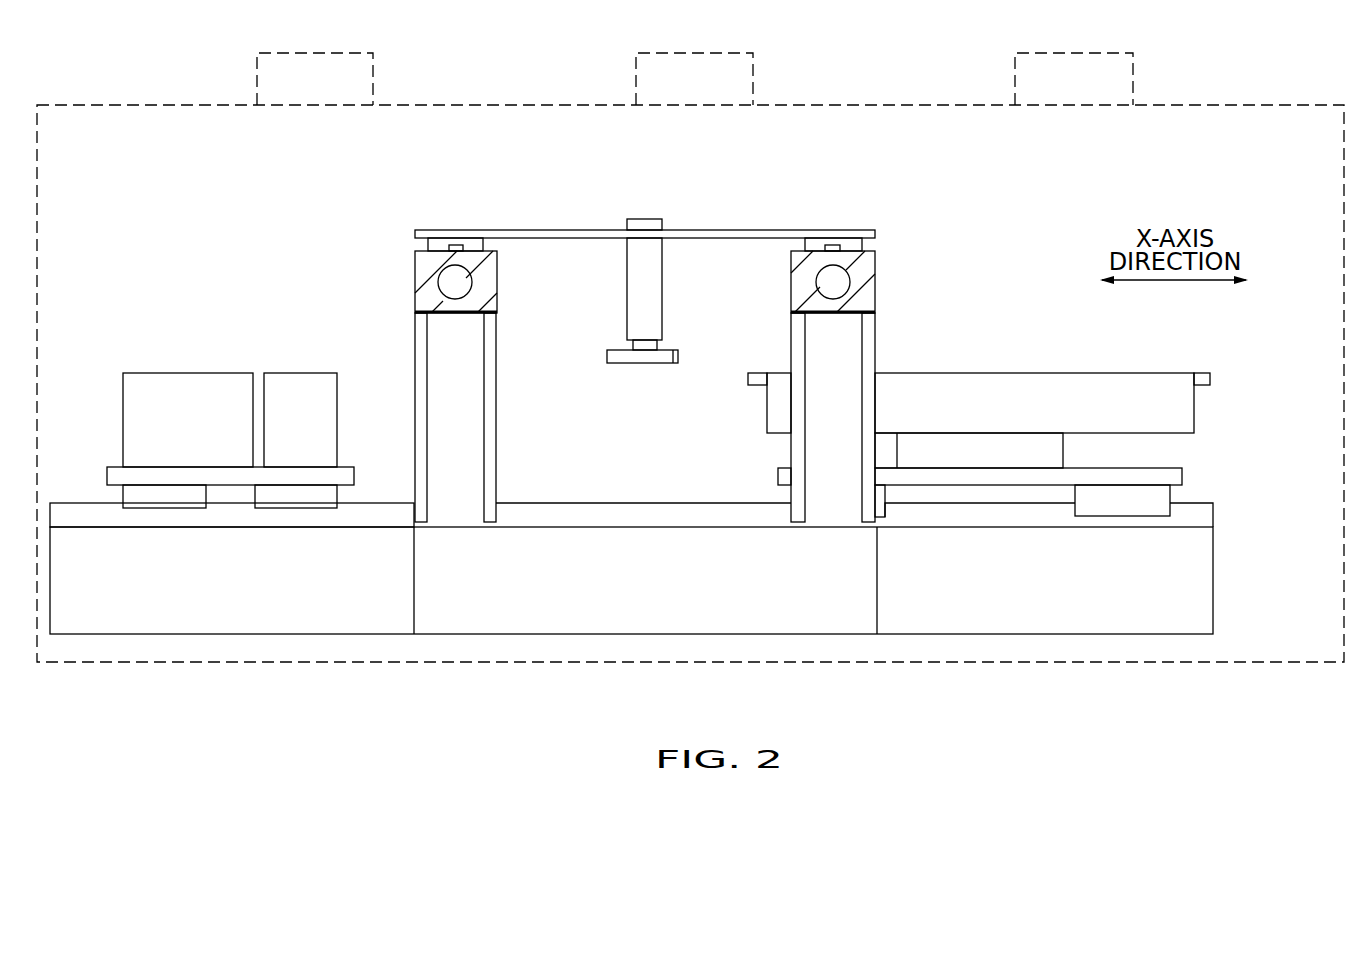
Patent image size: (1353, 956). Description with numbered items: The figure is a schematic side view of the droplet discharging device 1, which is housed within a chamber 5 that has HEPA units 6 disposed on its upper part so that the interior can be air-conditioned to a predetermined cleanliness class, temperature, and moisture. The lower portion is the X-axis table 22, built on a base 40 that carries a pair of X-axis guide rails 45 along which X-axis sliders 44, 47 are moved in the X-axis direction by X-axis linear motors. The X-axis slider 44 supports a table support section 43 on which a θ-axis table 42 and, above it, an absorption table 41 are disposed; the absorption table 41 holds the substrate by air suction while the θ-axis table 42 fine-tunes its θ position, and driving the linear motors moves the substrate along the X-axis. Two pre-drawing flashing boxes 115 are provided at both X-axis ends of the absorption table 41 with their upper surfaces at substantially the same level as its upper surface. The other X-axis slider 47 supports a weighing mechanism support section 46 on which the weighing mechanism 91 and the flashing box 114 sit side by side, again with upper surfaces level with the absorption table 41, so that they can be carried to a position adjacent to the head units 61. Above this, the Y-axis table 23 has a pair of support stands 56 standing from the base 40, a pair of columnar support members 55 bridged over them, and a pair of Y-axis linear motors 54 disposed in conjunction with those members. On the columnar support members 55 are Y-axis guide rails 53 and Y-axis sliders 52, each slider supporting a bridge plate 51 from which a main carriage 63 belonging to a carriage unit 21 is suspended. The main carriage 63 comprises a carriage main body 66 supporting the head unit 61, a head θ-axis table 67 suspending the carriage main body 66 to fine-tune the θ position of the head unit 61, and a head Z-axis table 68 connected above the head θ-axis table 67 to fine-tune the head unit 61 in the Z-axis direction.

The droplet discharging device 1 is at (660, 193).
The chamber 5 is at (1268, 104).
The HEPA units 6 is at (340, 52).
The carriage units 21 is at (672, 327).
The X-axis table 22 is at (1272, 440).
The Y-axis table 23 is at (446, 212).
The base 40 is at (1213, 580).
The absorption table 41 is at (1194, 418).
The θ-axis table 42 is at (1063, 455).
The table support section 43 is at (1182, 475).
The X-axis slider 44 is at (1170, 497).
The X-axis guide rails 45 is at (1213, 517).
The weighing mechanism support section 46 is at (107, 476).
The X-axis slider 47 is at (123, 496).
The bridge plates 51 is at (537, 228).
The Y-axis sliders 52 is at (478, 240).
The Y-axis guide rails 53 is at (456, 245).
The Y-axis linear motors 54 is at (472, 282).
The columnar support members 55 is at (415, 255).
The support stands 56 is at (469, 524).
The head units 61 is at (518, 365).
The main carriage 63 is at (368, 255).
The carriage main body 66 is at (607, 360).
The head θ-axis table 67 is at (640, 343).
The head Z-axis table 68 is at (630, 281).
The weighing mechanism 91 is at (157, 372).
The flashing box 114 is at (279, 372).
The pre-drawing flashing boxes 115 is at (758, 372).